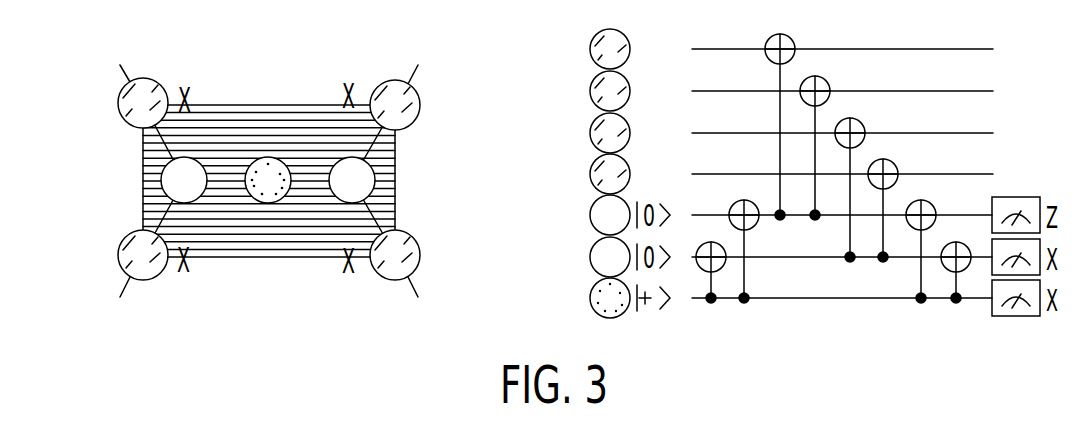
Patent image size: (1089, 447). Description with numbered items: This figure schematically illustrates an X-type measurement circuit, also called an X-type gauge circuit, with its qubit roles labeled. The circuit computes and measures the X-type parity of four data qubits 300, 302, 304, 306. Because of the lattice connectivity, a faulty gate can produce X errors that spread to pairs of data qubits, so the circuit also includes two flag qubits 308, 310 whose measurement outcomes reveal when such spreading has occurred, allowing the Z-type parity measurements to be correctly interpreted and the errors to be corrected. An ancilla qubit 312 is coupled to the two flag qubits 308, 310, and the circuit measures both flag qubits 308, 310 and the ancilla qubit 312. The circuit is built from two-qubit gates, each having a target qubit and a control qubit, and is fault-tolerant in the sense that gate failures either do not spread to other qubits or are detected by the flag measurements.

The data qubit 300 is at (118, 103).
The data qubit 302 is at (118, 255).
The data qubit 304 is at (420, 255).
The data qubit 306 is at (420, 104).
The flag qubit 308 is at (162, 178).
The flag qubit 310 is at (375, 180).
The ancilla qubit 312 is at (270, 157).